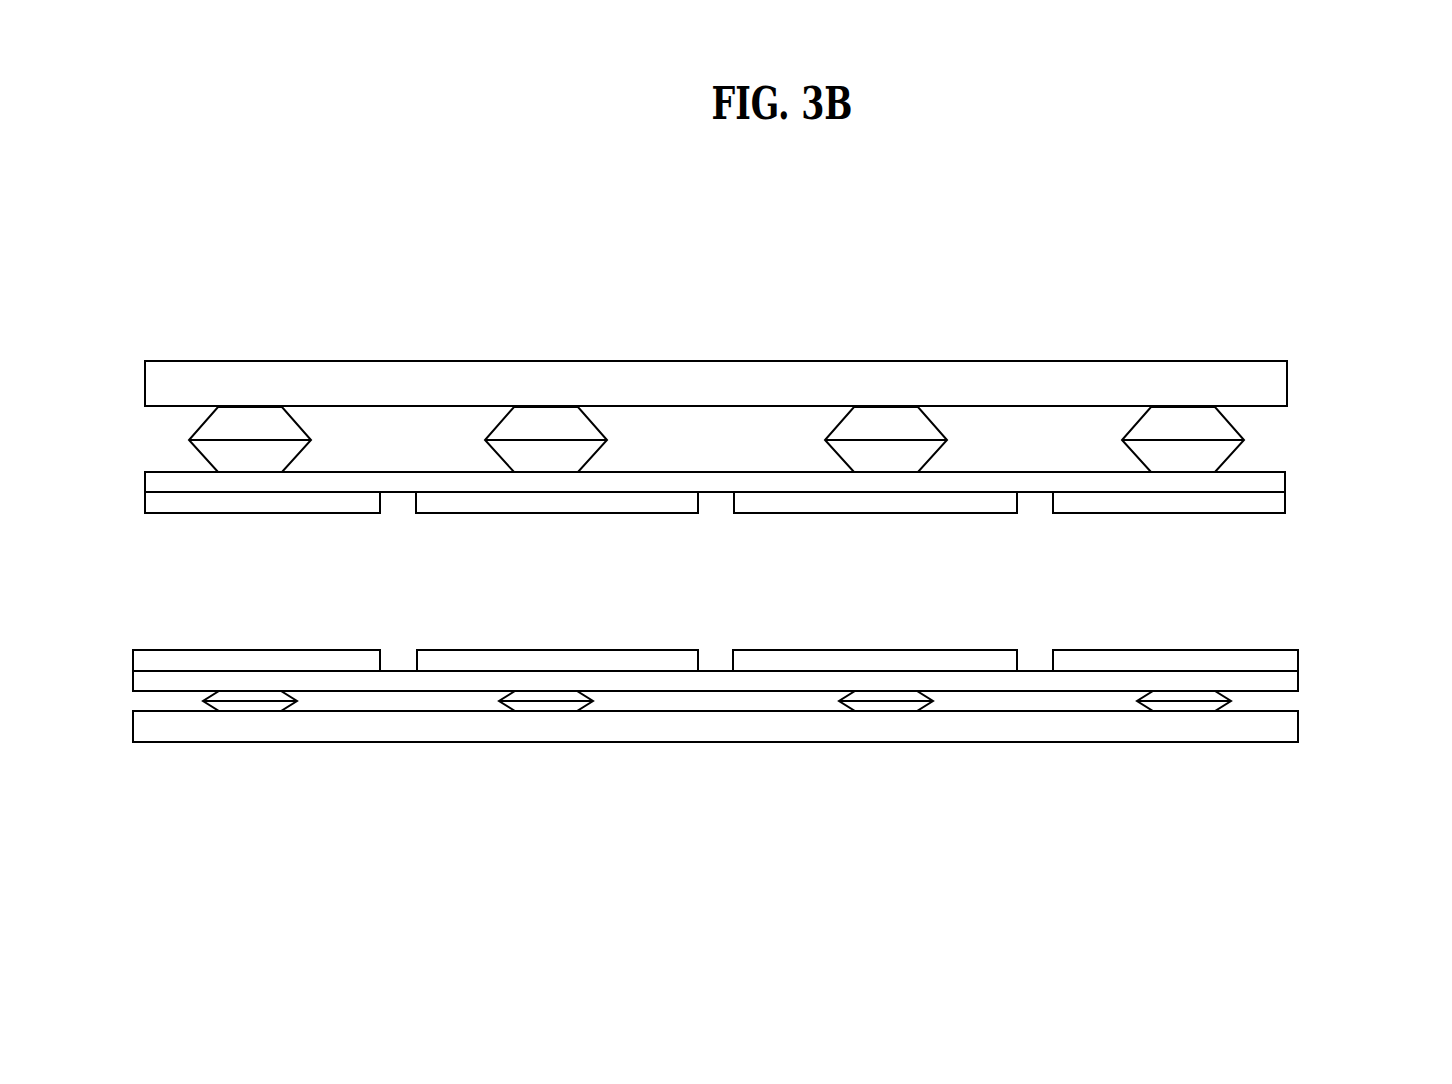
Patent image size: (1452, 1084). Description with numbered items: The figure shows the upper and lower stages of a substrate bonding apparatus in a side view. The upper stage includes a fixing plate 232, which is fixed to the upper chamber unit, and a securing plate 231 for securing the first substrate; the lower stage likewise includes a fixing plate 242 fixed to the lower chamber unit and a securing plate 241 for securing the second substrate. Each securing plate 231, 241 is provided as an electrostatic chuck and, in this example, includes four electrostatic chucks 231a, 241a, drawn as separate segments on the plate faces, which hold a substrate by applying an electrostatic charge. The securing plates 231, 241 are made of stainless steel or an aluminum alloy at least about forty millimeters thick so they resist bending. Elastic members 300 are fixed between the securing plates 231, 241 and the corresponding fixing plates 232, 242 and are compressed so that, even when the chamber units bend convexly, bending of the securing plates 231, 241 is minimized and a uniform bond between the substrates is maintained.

The elastic members 300 is at (250, 416).
The fixing plate 232 is at (1272, 382).
The securing plate 231 is at (1280, 483).
The electrostatic chucks 231a is at (1277, 500).
The electrostatic chucks 241a is at (1290, 661).
The securing plate 241 is at (1290, 678).
The fixing plate 242 is at (1290, 727).